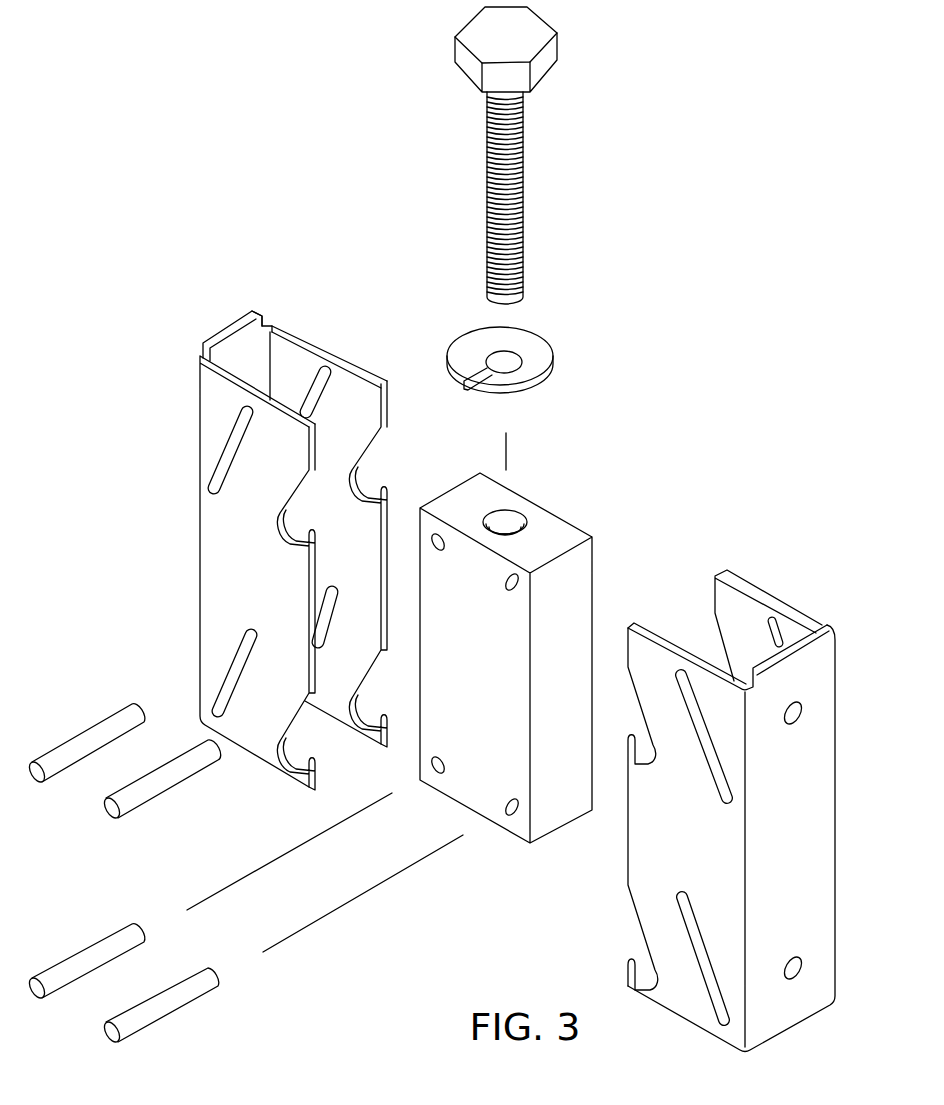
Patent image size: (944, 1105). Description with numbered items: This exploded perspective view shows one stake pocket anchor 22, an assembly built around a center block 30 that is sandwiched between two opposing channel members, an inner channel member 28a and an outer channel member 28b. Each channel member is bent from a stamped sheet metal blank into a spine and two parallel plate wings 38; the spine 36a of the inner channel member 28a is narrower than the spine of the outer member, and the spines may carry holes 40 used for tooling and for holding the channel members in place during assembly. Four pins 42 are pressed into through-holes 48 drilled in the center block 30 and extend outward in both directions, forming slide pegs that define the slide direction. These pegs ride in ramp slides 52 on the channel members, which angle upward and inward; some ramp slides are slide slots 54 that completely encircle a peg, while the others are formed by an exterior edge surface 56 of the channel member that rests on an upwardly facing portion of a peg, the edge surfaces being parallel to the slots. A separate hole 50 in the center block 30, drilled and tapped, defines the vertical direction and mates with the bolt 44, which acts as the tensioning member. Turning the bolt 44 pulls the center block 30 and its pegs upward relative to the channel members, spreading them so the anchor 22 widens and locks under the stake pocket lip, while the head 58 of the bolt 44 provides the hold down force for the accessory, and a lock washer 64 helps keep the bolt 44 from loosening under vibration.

The stake pocket anchor 22 is at (239, 200).
The inner channel member 28a is at (195, 403).
The outer channel member 28b is at (742, 548).
The center block 30 is at (552, 540).
The spine 36a is at (232, 347).
The parallel plate wings 38 is at (365, 525).
The holes 40 is at (243, 386).
The pins 42 is at (68, 757).
The bolt 44 is at (517, 170).
The through-holes 48 is at (438, 537).
The hole 50 is at (513, 510).
The ramp slides 52 is at (285, 508).
The slide slots 54 is at (217, 702).
The exterior edge surface 56 is at (380, 437).
The head 58 is at (468, 65).
The lock washer 64 is at (540, 360).